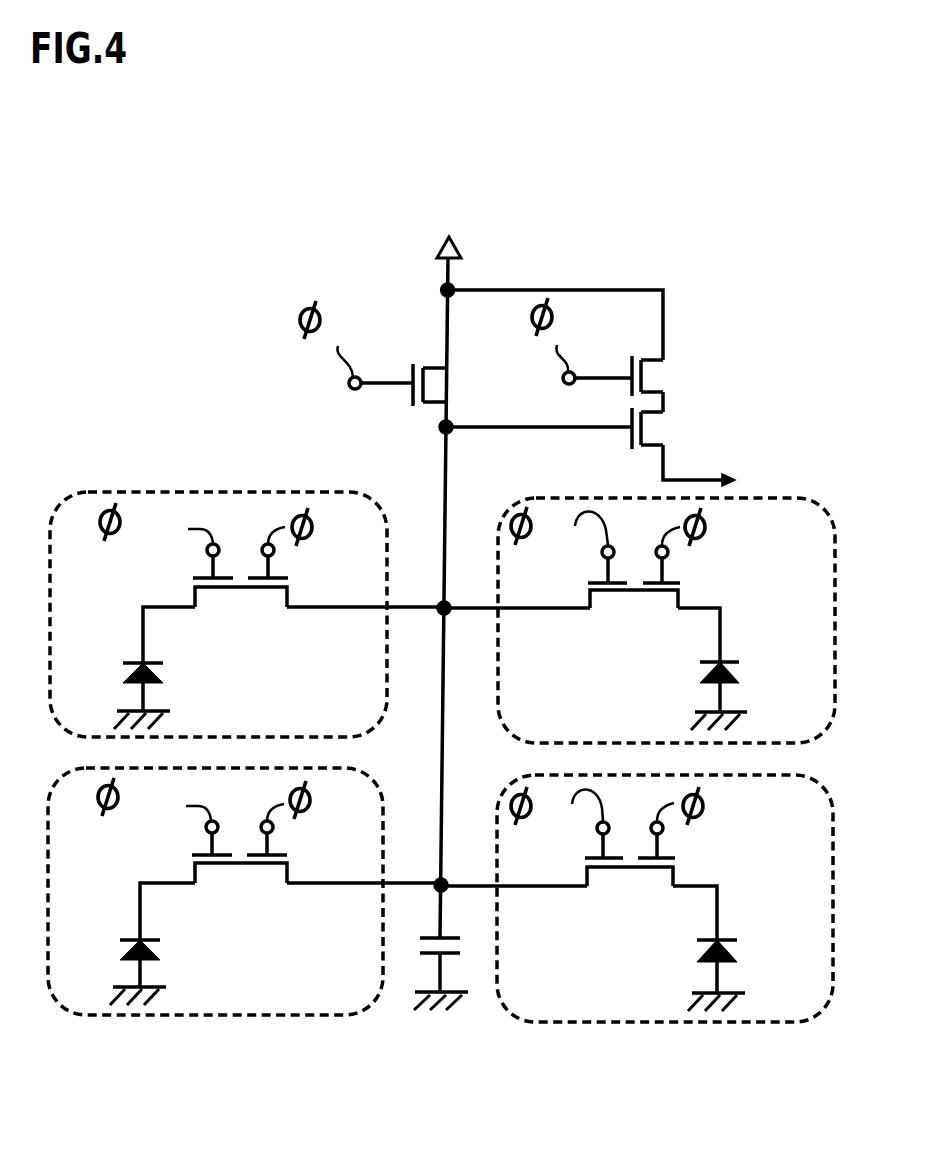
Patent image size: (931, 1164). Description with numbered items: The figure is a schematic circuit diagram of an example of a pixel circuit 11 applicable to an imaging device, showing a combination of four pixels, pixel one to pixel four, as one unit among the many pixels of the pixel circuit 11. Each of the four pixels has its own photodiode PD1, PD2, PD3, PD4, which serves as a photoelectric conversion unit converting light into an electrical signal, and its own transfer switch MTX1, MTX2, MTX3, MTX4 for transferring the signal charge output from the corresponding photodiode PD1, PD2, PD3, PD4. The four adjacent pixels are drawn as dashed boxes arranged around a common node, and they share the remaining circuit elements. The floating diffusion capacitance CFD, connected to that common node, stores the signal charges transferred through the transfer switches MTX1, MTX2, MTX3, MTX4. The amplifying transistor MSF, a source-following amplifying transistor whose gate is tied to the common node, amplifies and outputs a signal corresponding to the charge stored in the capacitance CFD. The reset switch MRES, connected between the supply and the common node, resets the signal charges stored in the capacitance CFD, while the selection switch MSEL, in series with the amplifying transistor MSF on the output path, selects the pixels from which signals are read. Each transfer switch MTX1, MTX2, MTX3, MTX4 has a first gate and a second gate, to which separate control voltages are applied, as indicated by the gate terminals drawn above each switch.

The pixel circuit 11 is at (593, 175).
The reset switch MRES is at (416, 353).
The selection switch MSEL is at (643, 347).
The amplifying transistor MSF is at (589, 428).
The floating diffusion capacitance CFD is at (428, 960).
The transfer switch MTX1 is at (272, 583).
The transfer switch MTX2 is at (609, 584).
The transfer switch MTX3 is at (269, 859).
The transfer switch MTX4 is at (606, 863).
The photodiode PD1 is at (119, 695).
The photodiode PD2 is at (692, 696).
The photodiode PD3 is at (116, 972).
The photodiode PD4 is at (690, 975).